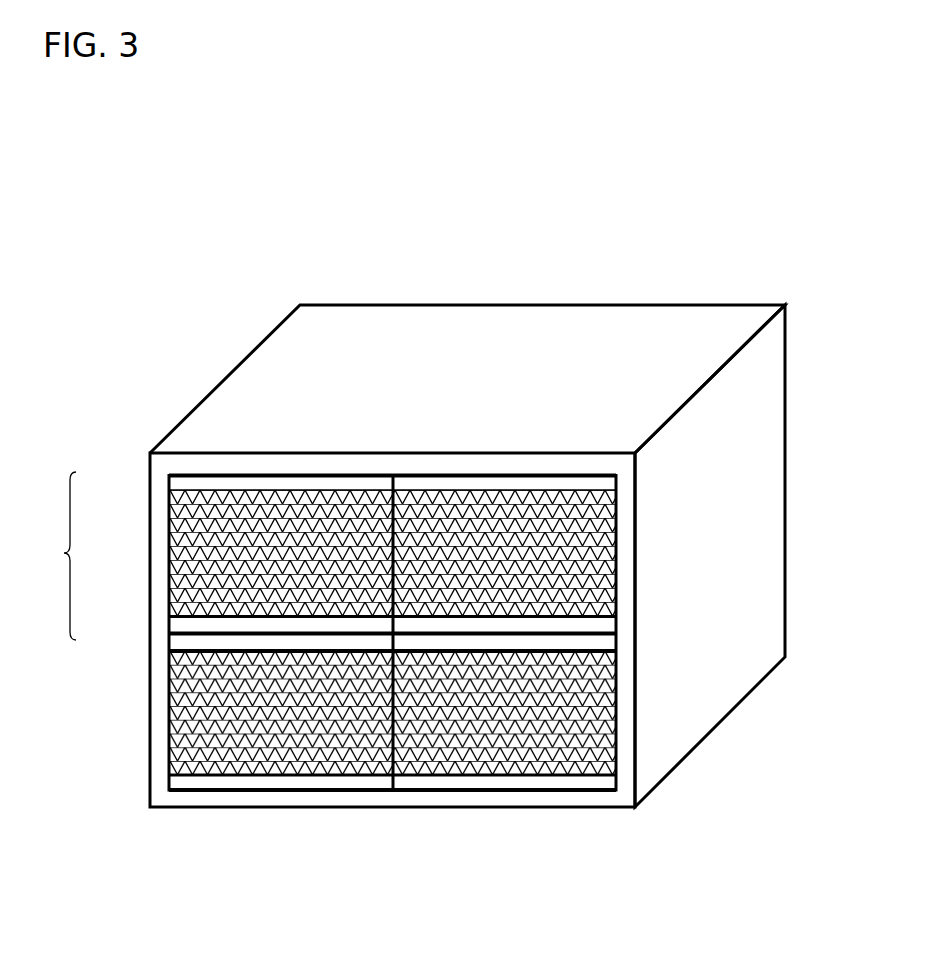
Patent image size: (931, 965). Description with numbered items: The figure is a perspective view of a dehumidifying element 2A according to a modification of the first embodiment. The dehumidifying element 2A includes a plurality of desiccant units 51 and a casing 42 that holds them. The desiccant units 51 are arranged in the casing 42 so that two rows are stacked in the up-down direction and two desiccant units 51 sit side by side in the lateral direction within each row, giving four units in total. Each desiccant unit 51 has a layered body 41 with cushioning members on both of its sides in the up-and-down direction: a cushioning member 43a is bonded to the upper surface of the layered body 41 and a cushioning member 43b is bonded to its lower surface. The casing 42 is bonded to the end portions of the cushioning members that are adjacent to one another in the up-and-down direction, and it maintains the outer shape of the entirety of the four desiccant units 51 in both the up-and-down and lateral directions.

The dehumidifying element 2A is at (683, 270).
The casing 42 is at (743, 542).
The desiccant unit 51 is at (807, 500).
The layered body 41 is at (177, 540).
The cushioning member 43a is at (177, 484).
The cushioning member 43b is at (178, 626).